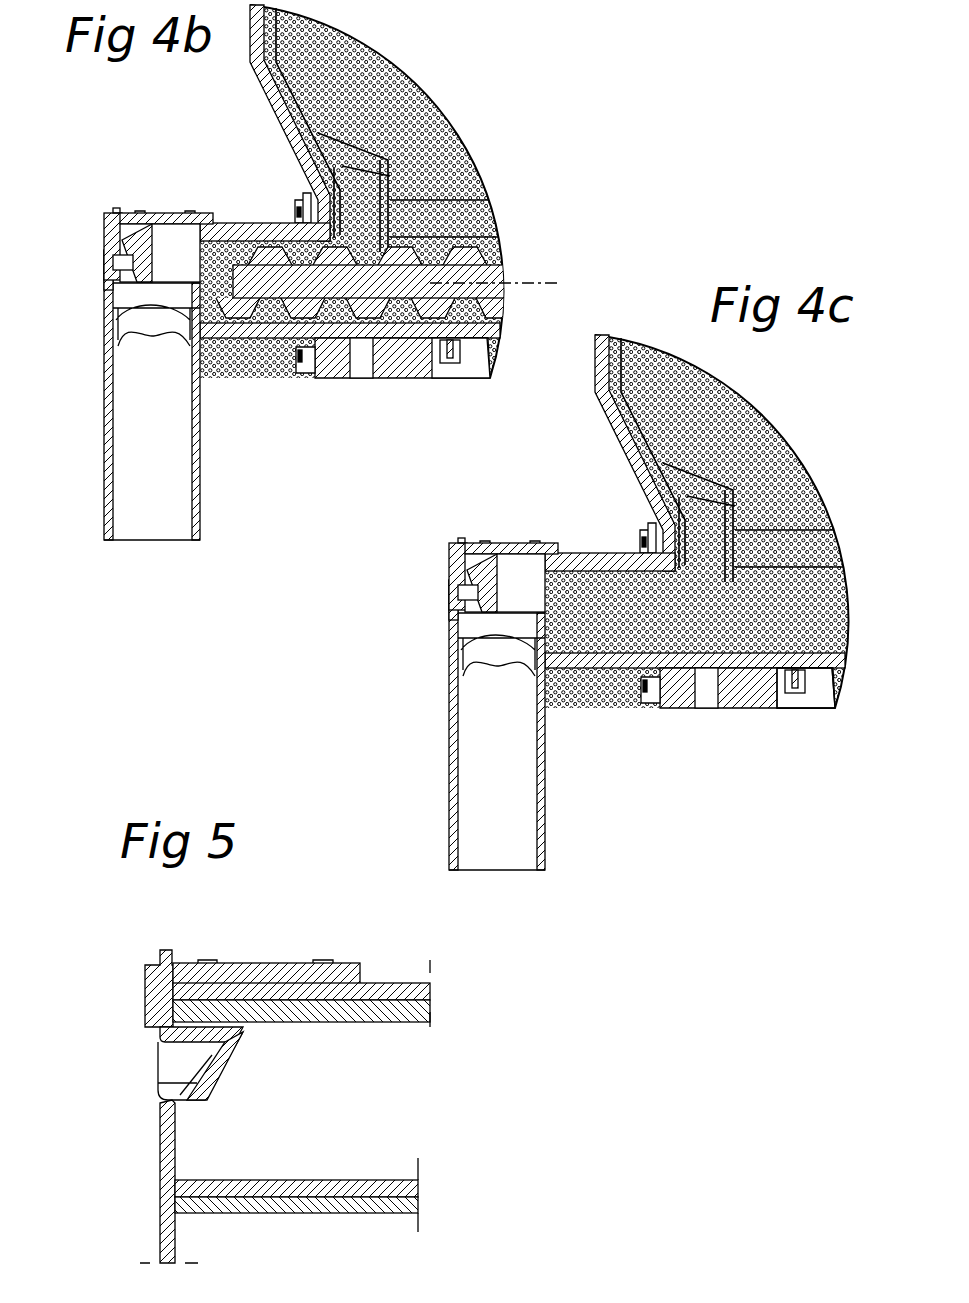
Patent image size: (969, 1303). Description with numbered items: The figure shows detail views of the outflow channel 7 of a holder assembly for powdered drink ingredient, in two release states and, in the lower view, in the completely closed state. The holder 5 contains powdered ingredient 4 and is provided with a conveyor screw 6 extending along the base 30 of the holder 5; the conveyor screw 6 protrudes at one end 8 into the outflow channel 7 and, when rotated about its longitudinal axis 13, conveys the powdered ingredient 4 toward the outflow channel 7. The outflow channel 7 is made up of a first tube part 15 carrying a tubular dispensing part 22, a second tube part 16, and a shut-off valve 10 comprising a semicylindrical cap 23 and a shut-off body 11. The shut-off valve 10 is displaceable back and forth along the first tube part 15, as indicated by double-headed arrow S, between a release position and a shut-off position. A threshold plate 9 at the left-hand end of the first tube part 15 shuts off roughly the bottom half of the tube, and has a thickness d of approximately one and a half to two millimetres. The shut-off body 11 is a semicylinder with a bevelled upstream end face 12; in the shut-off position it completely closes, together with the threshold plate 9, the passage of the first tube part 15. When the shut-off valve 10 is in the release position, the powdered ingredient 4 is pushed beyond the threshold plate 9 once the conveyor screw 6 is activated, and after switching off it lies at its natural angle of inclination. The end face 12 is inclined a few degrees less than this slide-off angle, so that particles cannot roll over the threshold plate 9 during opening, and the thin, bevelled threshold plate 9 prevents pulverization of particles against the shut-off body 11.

In FIG. 4B, the powdered ingredient 4 is at (415, 90).
In FIG. 4C, the powdered ingredient 4 is at (696, 521).
In FIG. 4B, the holder 5 is at (263, 57).
In FIG. 4C, the holder 5 is at (609, 453).
In FIG. 4B, the conveyor screw 6 is at (487, 288).
In FIG. 4C, the conveyor screw 6 is at (721, 627).
In FIG. 4B, the outflow channel 7 is at (103, 295).
In FIG. 4C, the outflow channel 7 is at (418, 604).
In FIG. 4B, the one end of the conveyor screw 8 is at (325, 295).
In FIG. 4C, the one end of the conveyor screw 8 is at (738, 689).
In FIG. 4B, the threshold plate 9 is at (165, 340).
In FIG. 4C, the threshold plate 9 is at (501, 677).
In FIG. 5, the threshold plate 9 is at (160, 1160).
In FIG. 4B, the shut-off valve 10 is at (103, 233).
In FIG. 4C, the shut-off valve 10 is at (423, 568).
In FIG. 5, the shut-off valve 10 is at (143, 990).
In FIG. 4B, the shut-off body 11 is at (160, 224).
In FIG. 4C, the shut-off body 11 is at (501, 539).
In FIG. 5, the shut-off body 11 is at (243, 1030).
In FIG. 5, the end face of the shut-off body 12 is at (226, 1070).
In FIG. 4B, the longitudinal axis of the conveyor screw 13 is at (543, 283).
In FIG. 4B, the first tube part 15 is at (255, 226).
In FIG. 4C, the first tube part 15 is at (610, 519).
In FIG. 5, the first tube part 15 is at (388, 985).
In FIG. 4B, the second tube part 16 is at (235, 338).
In FIG. 4C, the second tube part 16 is at (695, 700).
In FIG. 5, the second tube part 16 is at (385, 1012).
In FIG. 4B, the tubular dispensing part 22 is at (135, 370).
In FIG. 4C, the tubular dispensing part 22 is at (471, 725).
In FIG. 5, the tubular dispensing part 22 is at (140, 1234).
In FIG. 4B, the semicylindrical cap 23 is at (130, 212).
In FIG. 5, the semicylindrical cap 23 is at (270, 963).
In FIG. 4C, the base of the holder 30 is at (821, 712).
In FIG. 4B, the double-headed arrow S is at (115, 185).
In FIG. 4C, the double-headed arrow S is at (427, 497).
In FIG. 5, the double-headed arrow S is at (165, 928).
In FIG. 5, the thickness of the threshold plate d is at (217, 1135).